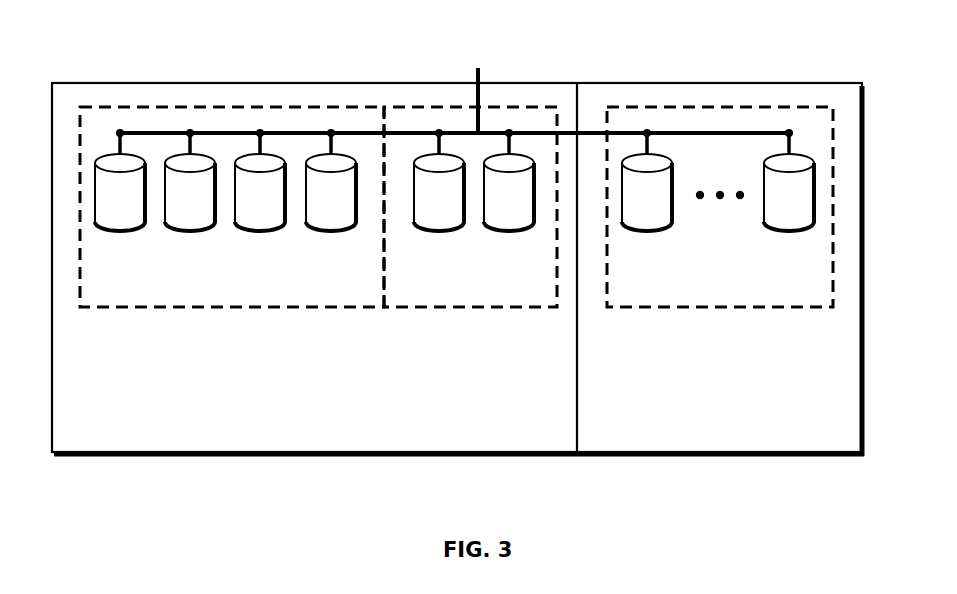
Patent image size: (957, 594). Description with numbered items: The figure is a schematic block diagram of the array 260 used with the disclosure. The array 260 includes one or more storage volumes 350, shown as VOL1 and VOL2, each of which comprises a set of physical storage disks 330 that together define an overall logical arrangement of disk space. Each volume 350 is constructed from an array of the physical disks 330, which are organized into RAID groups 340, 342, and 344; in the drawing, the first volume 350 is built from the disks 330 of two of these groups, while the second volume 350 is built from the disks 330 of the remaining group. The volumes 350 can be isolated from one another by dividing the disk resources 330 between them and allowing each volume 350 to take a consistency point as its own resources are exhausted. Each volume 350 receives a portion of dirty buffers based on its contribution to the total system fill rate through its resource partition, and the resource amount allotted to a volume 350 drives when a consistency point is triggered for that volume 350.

The array 260 is at (745, 477).
The physical storage disks 330 is at (333, 231).
The RAID group 340 is at (202, 307).
The RAID group 342 is at (453, 307).
The RAID group 344 is at (665, 307).
The volumes 350 is at (358, 424).